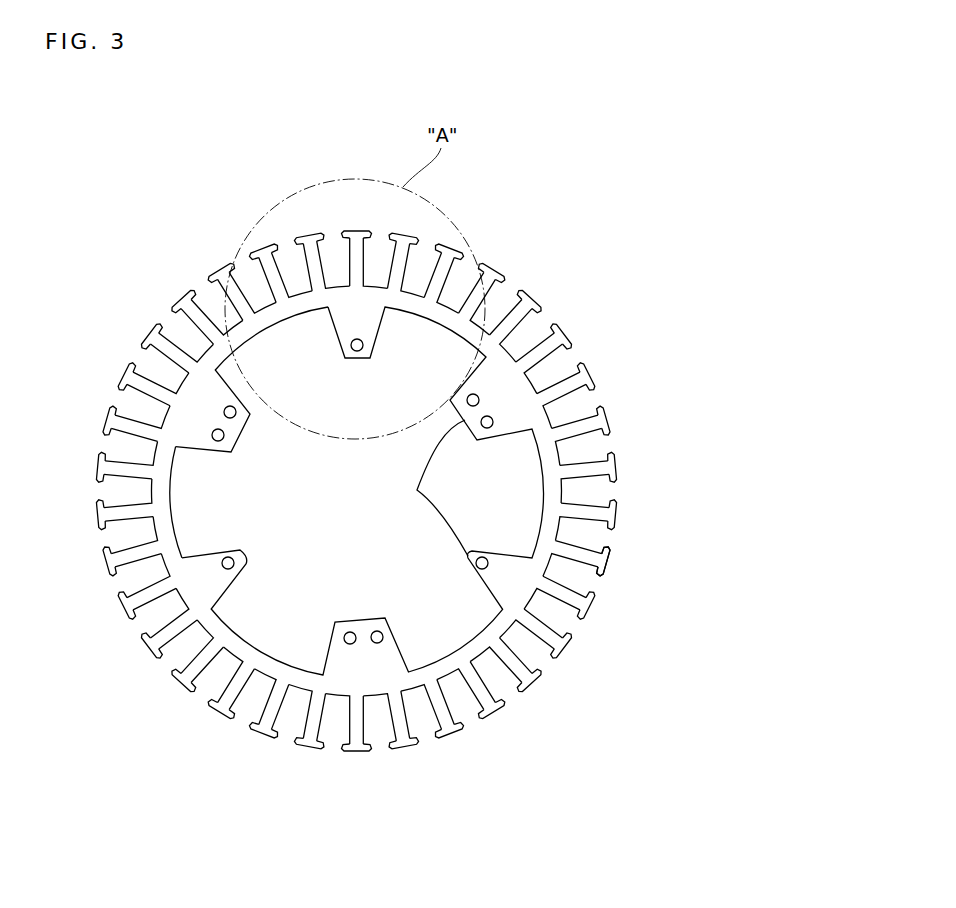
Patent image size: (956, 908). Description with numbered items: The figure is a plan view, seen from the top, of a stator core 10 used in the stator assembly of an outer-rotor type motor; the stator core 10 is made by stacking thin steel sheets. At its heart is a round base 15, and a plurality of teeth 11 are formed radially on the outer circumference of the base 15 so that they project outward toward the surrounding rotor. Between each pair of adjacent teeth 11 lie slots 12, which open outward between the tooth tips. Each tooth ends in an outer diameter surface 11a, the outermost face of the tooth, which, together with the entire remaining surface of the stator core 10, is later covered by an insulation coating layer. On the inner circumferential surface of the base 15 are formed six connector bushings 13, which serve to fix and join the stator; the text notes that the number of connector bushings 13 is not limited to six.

The stator core 10 is at (547, 286).
The teeth 11 is at (600, 557).
The outer diameter surfaces of the teeth 11a is at (605, 548).
The slots 12 is at (583, 580).
The connector bushings 13 is at (417, 490).
The base 15 is at (165, 503).